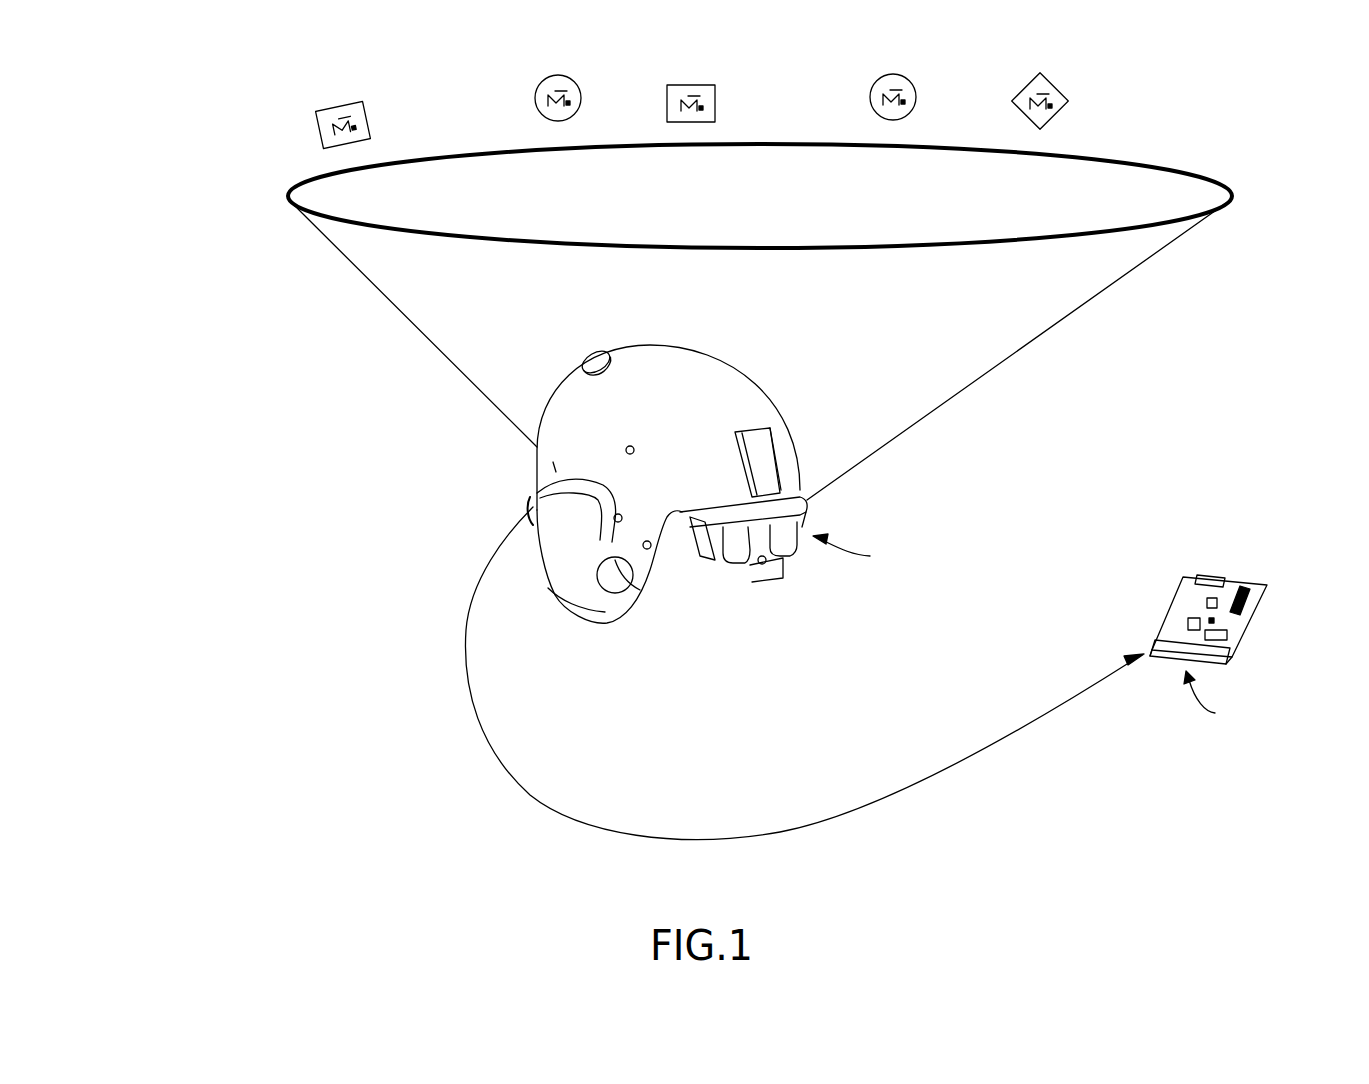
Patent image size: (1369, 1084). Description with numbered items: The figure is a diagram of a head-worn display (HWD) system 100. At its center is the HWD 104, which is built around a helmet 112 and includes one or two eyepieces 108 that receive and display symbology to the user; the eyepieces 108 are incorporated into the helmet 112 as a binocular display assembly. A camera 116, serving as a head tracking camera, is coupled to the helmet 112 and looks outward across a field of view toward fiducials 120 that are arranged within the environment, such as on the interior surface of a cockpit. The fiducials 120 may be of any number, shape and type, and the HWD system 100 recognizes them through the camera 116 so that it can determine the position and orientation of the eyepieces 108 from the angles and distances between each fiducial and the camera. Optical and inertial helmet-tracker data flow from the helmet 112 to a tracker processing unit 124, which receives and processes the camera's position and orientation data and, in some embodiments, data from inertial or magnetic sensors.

The HWD system 100 is at (150, 79).
The fiducials 120 is at (283, 67).
The HWD 104 is at (780, 313).
The helmet 112 is at (683, 358).
The camera 116 is at (592, 361).
The eyepieces 108 is at (735, 565).
The tracker processing unit 124 is at (1234, 558).